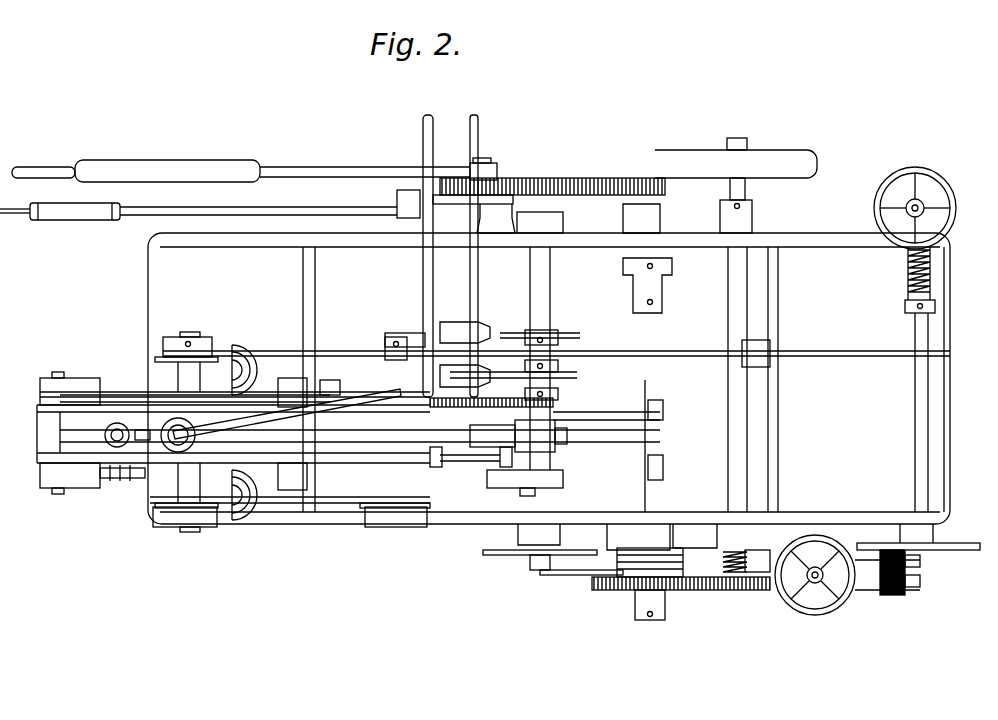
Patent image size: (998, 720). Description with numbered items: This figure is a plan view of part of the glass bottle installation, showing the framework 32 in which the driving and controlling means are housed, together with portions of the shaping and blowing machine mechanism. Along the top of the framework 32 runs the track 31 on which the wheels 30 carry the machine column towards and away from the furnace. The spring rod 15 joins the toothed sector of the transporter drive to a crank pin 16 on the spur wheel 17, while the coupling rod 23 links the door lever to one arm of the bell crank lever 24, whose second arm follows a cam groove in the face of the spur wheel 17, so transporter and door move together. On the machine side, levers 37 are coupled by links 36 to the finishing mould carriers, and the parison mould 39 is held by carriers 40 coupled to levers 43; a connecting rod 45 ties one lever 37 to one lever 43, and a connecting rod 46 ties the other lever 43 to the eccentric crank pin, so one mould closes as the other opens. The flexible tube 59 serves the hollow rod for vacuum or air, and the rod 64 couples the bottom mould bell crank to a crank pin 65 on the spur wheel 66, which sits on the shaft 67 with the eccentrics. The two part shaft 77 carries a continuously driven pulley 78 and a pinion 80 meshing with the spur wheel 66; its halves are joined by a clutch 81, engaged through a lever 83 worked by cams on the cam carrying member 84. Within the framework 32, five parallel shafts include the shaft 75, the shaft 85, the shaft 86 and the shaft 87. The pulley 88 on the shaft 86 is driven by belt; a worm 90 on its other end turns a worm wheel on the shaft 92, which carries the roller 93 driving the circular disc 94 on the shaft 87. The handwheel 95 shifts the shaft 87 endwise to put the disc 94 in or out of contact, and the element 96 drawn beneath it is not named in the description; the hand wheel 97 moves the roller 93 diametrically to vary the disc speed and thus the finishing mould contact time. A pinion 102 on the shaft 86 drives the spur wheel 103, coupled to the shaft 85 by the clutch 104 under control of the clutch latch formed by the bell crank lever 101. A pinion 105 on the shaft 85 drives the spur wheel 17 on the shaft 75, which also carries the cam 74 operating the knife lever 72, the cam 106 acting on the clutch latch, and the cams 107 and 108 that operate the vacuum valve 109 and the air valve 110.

The spring rod 15 is at (245, 170).
The crank pin 16 is at (488, 160).
The spur wheel 17 is at (560, 178).
The coupling rod 23 is at (320, 208).
The bell crank lever 24 is at (500, 195).
The wheels 30 is at (165, 345).
The track 31 is at (838, 352).
The framework 32 is at (815, 245).
The links 36 is at (120, 480).
The levers 37 is at (76, 393).
The parison mould 39 is at (243, 360).
The carriers 40 is at (280, 380).
The levers 43 is at (300, 400).
The connecting rod 45 is at (122, 396).
The connecting rod 46 is at (440, 470).
The flexible tube 59 is at (397, 340).
The rod 64 is at (335, 385).
The crank pin 65 is at (456, 335).
The spur wheel 66 is at (545, 362).
The shaft 67 is at (480, 462).
The lever 72 is at (665, 440).
The cam 74 is at (560, 448).
The shaft 75 is at (548, 480).
The two part shaft 77 is at (508, 470).
The pulley 78 is at (470, 468).
The pinion 80 is at (556, 403).
The clutch 81 is at (565, 468).
The lever 83 is at (663, 410).
The cam carrying member 84 is at (575, 414).
The shaft 85 is at (663, 478).
The shaft 86 is at (745, 440).
The shaft 87 is at (915, 458).
The pulley 88 is at (785, 160).
The worm 90 is at (720, 578).
The shaft 92 is at (760, 575).
The roller 93 is at (892, 597).
The circular disc 94 is at (940, 552).
The handwheel 95 is at (935, 185).
The spring 96 is at (930, 278).
The hand wheel 97 is at (810, 605).
The bell crank lever 101 is at (570, 576).
The pinion 102 is at (735, 575).
The spur wheel 103 is at (610, 585).
The clutch 104 is at (648, 600).
The pinion 105 is at (650, 180).
The cam 106 is at (530, 556).
The cam 107 is at (582, 336).
The cam 108 is at (578, 375).
The valve 109 is at (495, 333).
The valve 110 is at (520, 338).